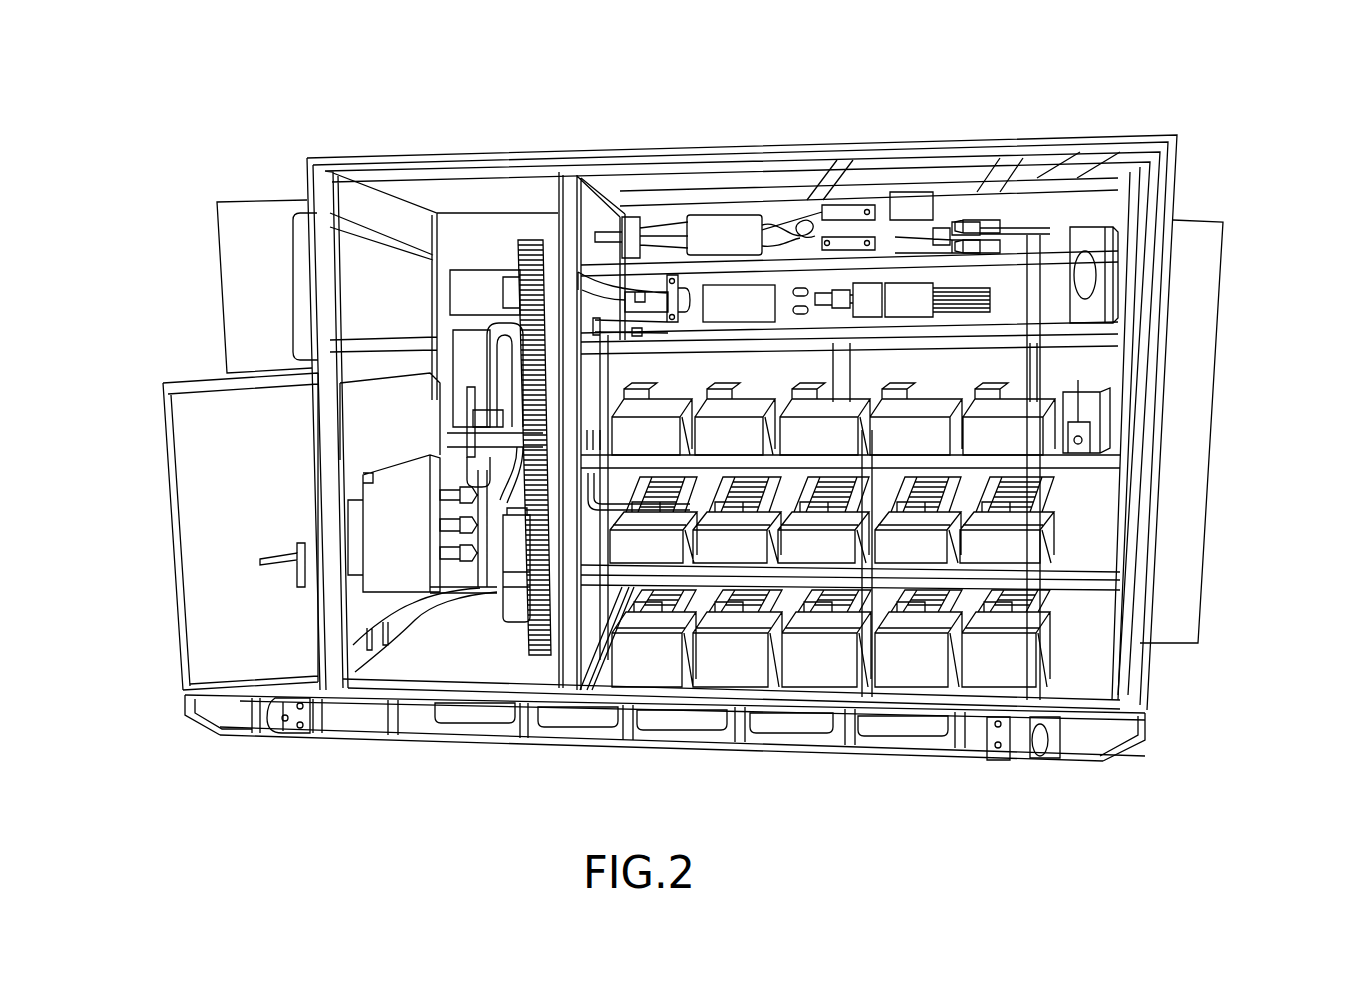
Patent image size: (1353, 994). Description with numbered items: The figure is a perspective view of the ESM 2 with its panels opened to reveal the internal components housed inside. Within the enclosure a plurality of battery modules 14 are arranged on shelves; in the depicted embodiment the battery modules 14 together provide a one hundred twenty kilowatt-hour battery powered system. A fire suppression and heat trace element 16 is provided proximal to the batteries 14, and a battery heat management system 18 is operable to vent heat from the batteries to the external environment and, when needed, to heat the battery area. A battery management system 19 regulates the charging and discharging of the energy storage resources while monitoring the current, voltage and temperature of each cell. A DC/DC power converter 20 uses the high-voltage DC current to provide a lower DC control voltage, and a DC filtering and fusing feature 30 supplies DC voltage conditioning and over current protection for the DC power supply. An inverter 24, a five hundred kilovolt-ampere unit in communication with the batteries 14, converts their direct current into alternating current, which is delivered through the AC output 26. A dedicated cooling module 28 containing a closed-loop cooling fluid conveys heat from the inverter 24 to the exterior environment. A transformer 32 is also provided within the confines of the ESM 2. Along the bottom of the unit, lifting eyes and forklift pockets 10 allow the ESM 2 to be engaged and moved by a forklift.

The ESM 2 is at (185, 285).
The lifting eyes and forklift pockets 10 is at (600, 718).
The battery modules 14 is at (815, 548).
The fire suppression and heat trace element 16 is at (1090, 493).
The battery heat management system 18 is at (1197, 307).
The battery management system 19 is at (923, 297).
The DC/DC power converter 20 is at (766, 298).
The inverter 24 is at (353, 497).
The AC output 26 is at (440, 525).
The dedicated cooling module 28 is at (233, 257).
The DC filtering and fusing feature 30 is at (832, 223).
The transformer 32 is at (433, 592).